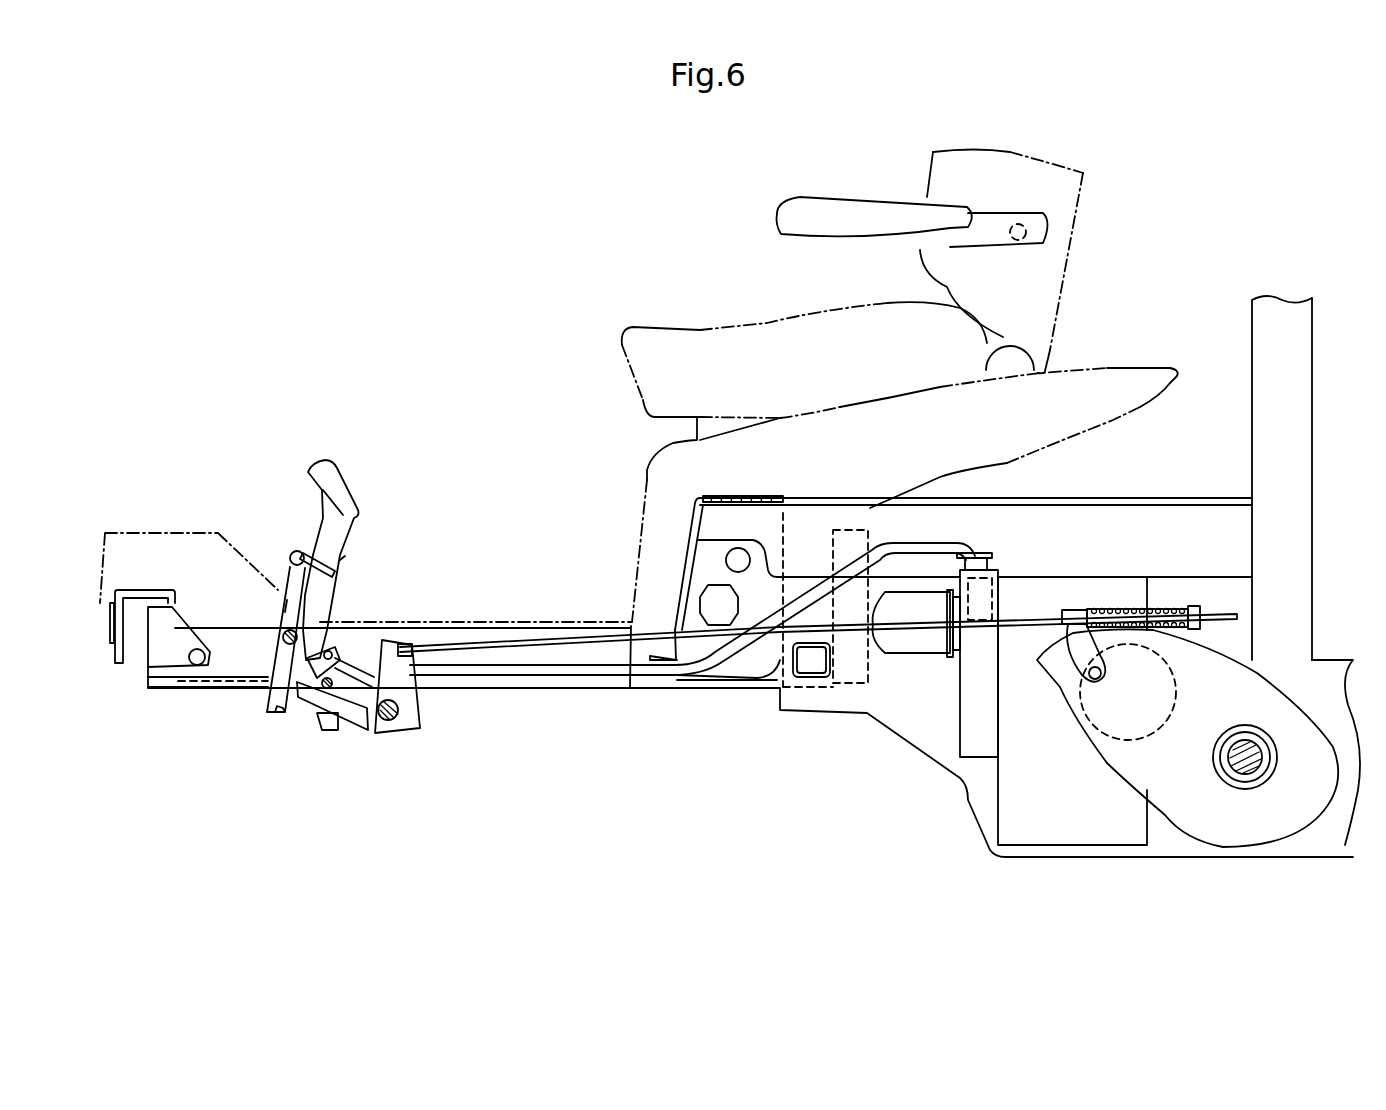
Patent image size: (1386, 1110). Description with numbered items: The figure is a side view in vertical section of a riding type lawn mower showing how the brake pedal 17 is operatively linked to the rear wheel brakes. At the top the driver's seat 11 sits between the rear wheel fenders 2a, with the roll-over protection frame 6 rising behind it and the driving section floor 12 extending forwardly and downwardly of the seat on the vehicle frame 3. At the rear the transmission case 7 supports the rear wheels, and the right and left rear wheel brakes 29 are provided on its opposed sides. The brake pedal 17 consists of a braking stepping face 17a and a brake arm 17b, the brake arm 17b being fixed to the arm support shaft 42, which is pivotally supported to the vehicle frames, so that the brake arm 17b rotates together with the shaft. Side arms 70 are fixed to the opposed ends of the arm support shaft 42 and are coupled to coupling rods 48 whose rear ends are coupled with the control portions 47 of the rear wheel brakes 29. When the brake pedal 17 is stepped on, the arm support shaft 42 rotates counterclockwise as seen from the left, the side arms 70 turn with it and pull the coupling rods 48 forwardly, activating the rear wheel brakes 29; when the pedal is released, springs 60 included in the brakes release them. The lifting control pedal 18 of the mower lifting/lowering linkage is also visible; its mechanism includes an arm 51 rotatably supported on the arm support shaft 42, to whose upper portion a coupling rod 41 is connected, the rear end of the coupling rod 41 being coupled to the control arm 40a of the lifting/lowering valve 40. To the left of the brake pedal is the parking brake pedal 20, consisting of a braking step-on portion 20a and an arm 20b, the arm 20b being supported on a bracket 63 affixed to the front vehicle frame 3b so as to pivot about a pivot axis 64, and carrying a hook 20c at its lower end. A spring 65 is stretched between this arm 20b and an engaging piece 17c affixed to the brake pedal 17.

The rear wheel fender 2a is at (633, 478).
The vehicle frame 3 is at (498, 690).
The front vehicle frame 3b is at (148, 590).
The roll-over protection (ROPS) frame 6 is at (1252, 340).
The transmission case 7 is at (1036, 847).
The driver's seat 11 is at (768, 327).
The driving section floor 12 is at (516, 620).
The brake pedal 17 is at (351, 489).
The braking stepping face 17a is at (345, 468).
The brake arm 17b is at (350, 557).
The engaging piece 17c is at (343, 723).
The lifting control pedal 18 is at (333, 566).
The parking brake pedal 20 is at (298, 548).
The braking step-on portion 20a is at (290, 562).
The arm 20b is at (283, 604).
The hook 20c is at (265, 702).
The rear wheel brake 29 is at (1095, 720).
The lifting/lowering valve 40 is at (1000, 588).
The control arm 40a is at (982, 557).
The coupling rod 41 is at (575, 678).
The arm support shaft 42 is at (402, 728).
The control portion 47 is at (1068, 645).
The coupling rod 48 is at (593, 640).
The arm 51 is at (365, 655).
The spring 60 is at (1162, 612).
The bracket 63 is at (255, 653).
The pivot axis 64 is at (282, 628).
The spring 65 is at (303, 700).
The side arm 70 is at (392, 648).